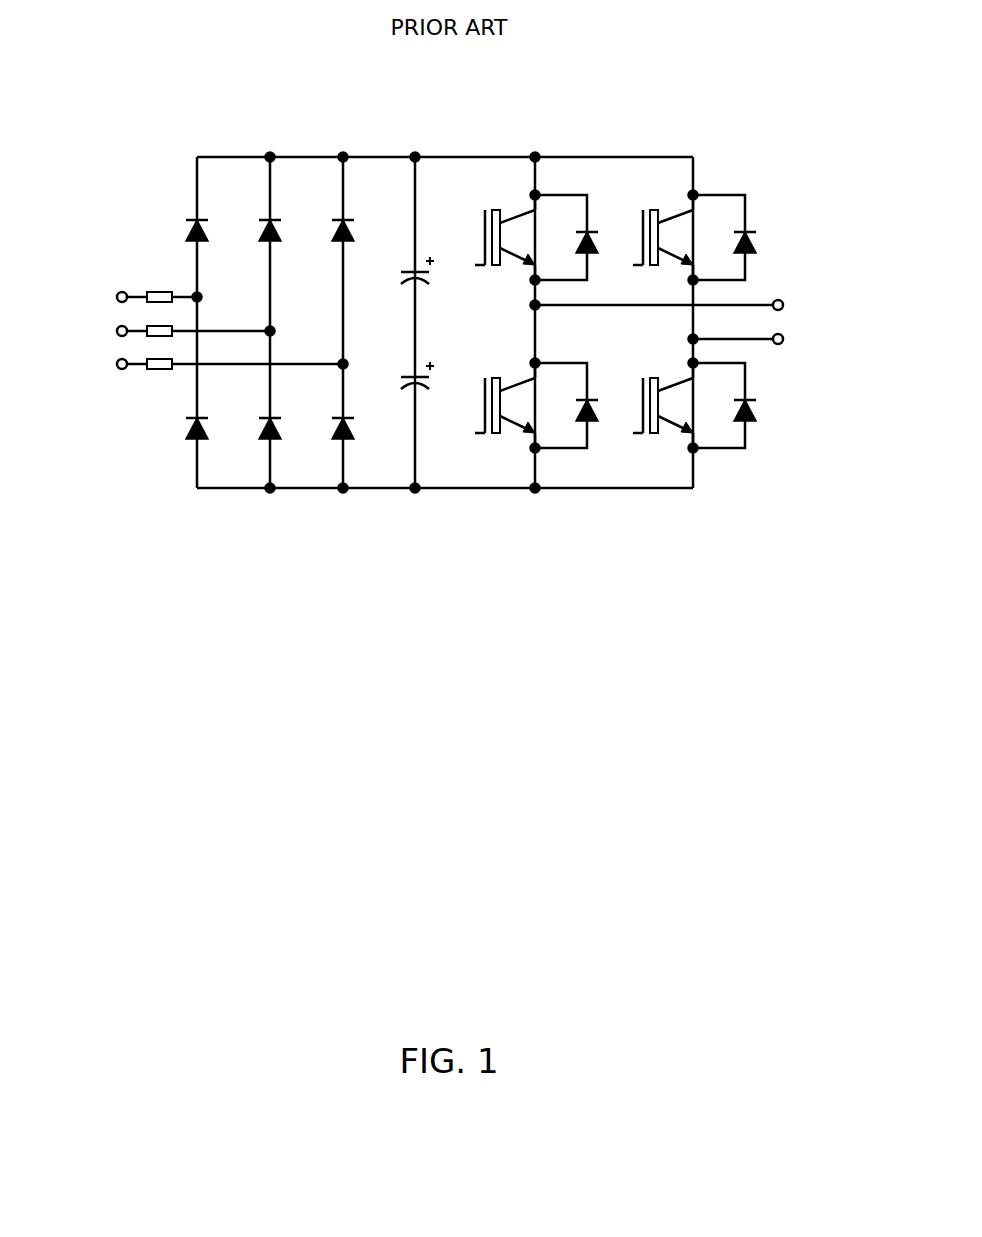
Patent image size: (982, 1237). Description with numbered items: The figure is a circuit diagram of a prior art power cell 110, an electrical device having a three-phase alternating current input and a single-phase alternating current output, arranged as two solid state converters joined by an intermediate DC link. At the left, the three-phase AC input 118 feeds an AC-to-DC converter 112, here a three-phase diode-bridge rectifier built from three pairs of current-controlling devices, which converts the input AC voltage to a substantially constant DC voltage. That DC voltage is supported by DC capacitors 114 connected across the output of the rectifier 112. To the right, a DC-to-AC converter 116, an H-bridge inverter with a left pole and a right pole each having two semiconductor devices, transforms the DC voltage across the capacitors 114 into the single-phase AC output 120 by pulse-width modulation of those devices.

The power cell 110 is at (192, 80).
The AC-to-DC converter 112 is at (353, 552).
The DC capacitors 114 is at (368, 552).
The DC-to-AC converter 116 is at (760, 552).
The input 118 is at (118, 273).
The AC output 120 is at (808, 278).